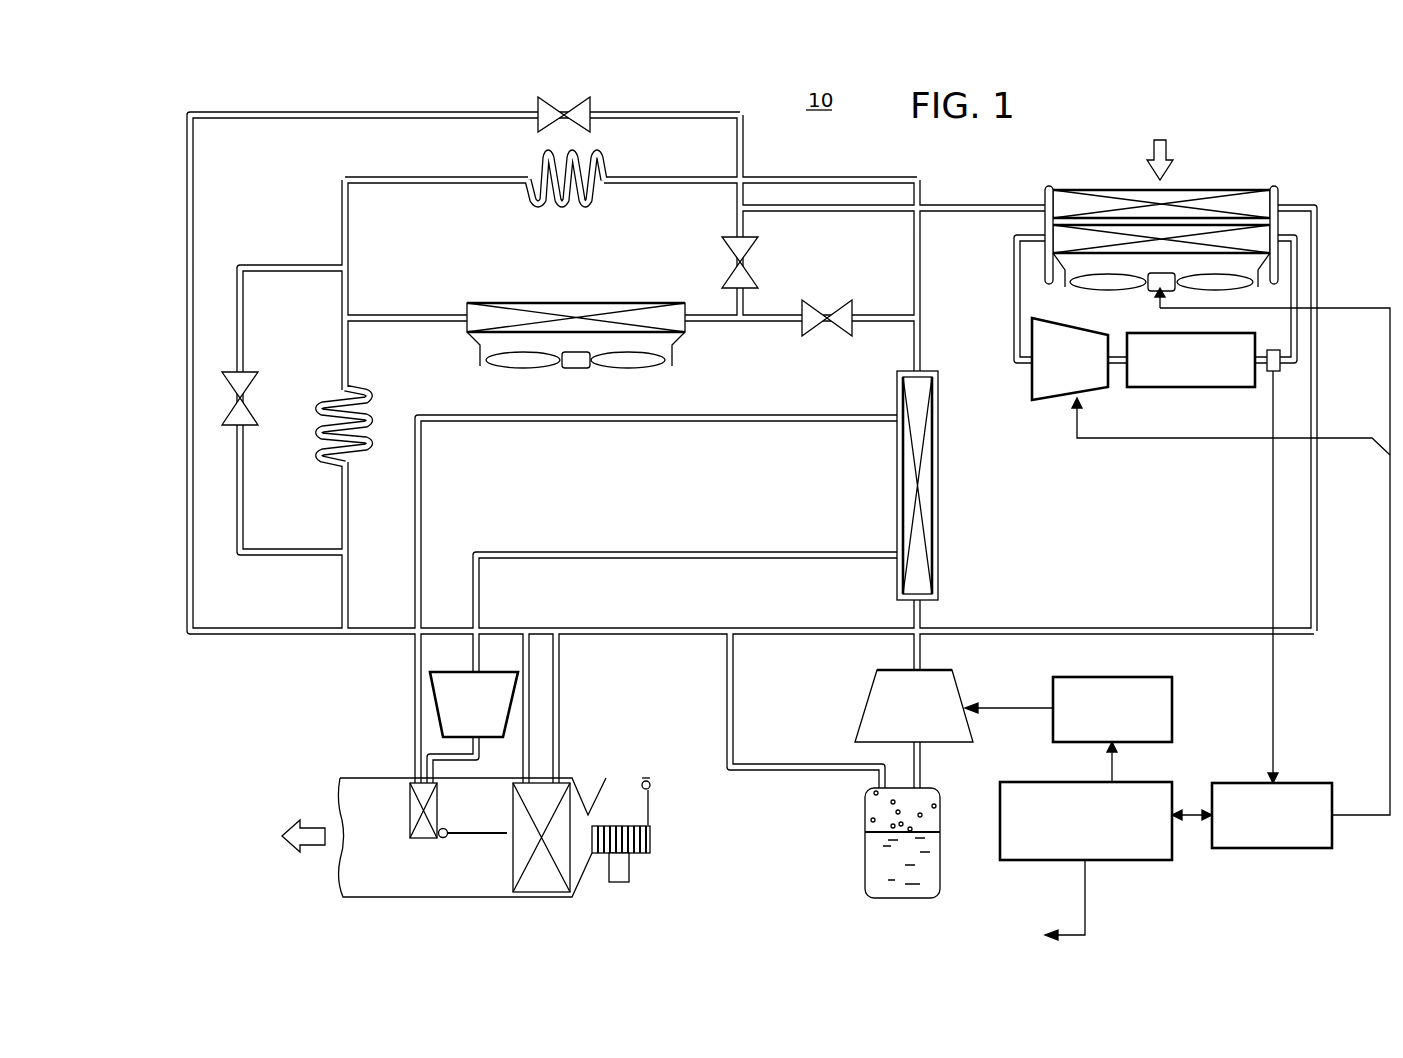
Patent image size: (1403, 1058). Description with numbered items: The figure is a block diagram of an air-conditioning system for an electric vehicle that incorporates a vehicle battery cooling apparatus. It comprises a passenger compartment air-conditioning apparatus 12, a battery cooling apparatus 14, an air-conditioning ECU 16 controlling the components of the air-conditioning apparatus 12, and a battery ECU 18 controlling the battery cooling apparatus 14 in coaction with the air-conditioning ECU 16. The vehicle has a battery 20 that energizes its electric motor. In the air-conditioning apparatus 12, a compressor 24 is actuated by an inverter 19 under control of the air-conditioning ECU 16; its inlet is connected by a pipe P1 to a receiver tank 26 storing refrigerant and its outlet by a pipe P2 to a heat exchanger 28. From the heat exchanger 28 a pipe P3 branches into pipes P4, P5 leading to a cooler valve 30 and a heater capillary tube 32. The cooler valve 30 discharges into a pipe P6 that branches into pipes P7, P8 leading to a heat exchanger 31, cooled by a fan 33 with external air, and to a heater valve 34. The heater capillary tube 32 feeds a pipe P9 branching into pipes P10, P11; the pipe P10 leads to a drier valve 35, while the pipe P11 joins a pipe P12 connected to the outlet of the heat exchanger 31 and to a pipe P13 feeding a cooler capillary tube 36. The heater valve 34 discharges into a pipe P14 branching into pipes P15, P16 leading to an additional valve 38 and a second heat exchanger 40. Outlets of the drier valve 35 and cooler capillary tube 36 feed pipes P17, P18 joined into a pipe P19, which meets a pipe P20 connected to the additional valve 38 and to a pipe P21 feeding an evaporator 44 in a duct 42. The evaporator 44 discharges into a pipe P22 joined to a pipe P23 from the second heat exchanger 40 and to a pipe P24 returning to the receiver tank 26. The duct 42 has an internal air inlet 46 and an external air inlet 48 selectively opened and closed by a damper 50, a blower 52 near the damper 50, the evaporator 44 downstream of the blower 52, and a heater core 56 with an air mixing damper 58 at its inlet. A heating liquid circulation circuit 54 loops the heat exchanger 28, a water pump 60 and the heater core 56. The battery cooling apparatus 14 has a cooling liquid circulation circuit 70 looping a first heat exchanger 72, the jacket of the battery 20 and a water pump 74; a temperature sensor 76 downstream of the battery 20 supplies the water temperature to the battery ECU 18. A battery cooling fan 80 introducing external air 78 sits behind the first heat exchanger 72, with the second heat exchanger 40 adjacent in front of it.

The passenger compartment air-conditioning apparatus 12 is at (204, 110).
The battery cooling apparatus 14 is at (1255, 170).
The air-conditioning ECU 16 is at (1152, 788).
The battery ECU 18 is at (1312, 788).
The inverter 19 is at (1152, 678).
The battery 20 is at (1205, 391).
The compressor 24 is at (960, 686).
The receiver tank 26 is at (941, 825).
The heat exchanger 28 is at (938, 486).
The cooler valve 30 is at (822, 334).
The heat exchanger 31 is at (533, 303).
The heater capillary tube 32 is at (563, 207).
The fan 33 is at (531, 370).
The heater valve 34 is at (746, 266).
The drier valve 35 is at (246, 402).
The cooler capillary tube 36 is at (362, 387).
The additional valve 38 is at (572, 101).
The second heat exchanger 40 is at (1122, 194).
The duct 42 is at (372, 775).
The evaporator 44 is at (510, 873).
The internal air inlet 46 is at (626, 780).
The external air inlet 48 is at (655, 813).
The damper 50 is at (648, 796).
The blower 52 is at (628, 877).
The heating liquid circulation circuit 54 is at (498, 464).
The heater core 56 is at (406, 817).
The air mixing damper 58 is at (477, 834).
The water pump 60 is at (446, 673).
The cooling liquid circulation circuit 70 is at (1013, 370).
The first heat exchanger 72 is at (1080, 235).
The water pump 74 is at (1090, 396).
The temperature sensor 76 is at (1270, 347).
The external air 78 is at (1160, 137).
The battery cooling fan 80 is at (1100, 290).
The pipe P1 is at (921, 774).
The pipe P2 is at (921, 656).
The pipe P3 is at (922, 347).
The pipe P4 is at (878, 318).
The pipe P5 is at (922, 272).
The pipe P6 is at (772, 330).
The pipe P7 is at (710, 330).
The pipe P8 is at (745, 303).
The pipe P9 is at (442, 180).
The pipe P10 is at (287, 267).
The pipe P11 is at (348, 296).
The pipe P12 is at (438, 317).
The pipe P13 is at (348, 353).
The pipe P14 is at (745, 223).
The pipe P15 is at (666, 113).
The pipe P16 is at (990, 207).
The pipe P17 is at (242, 487).
The pipe P18 is at (340, 509).
The pipe P19 is at (340, 579).
The pipe P20 is at (232, 630).
The pipe P21 is at (383, 630).
The pipe P22 is at (655, 630).
The pipe P23 is at (1318, 267).
The pipe P24 is at (734, 727).